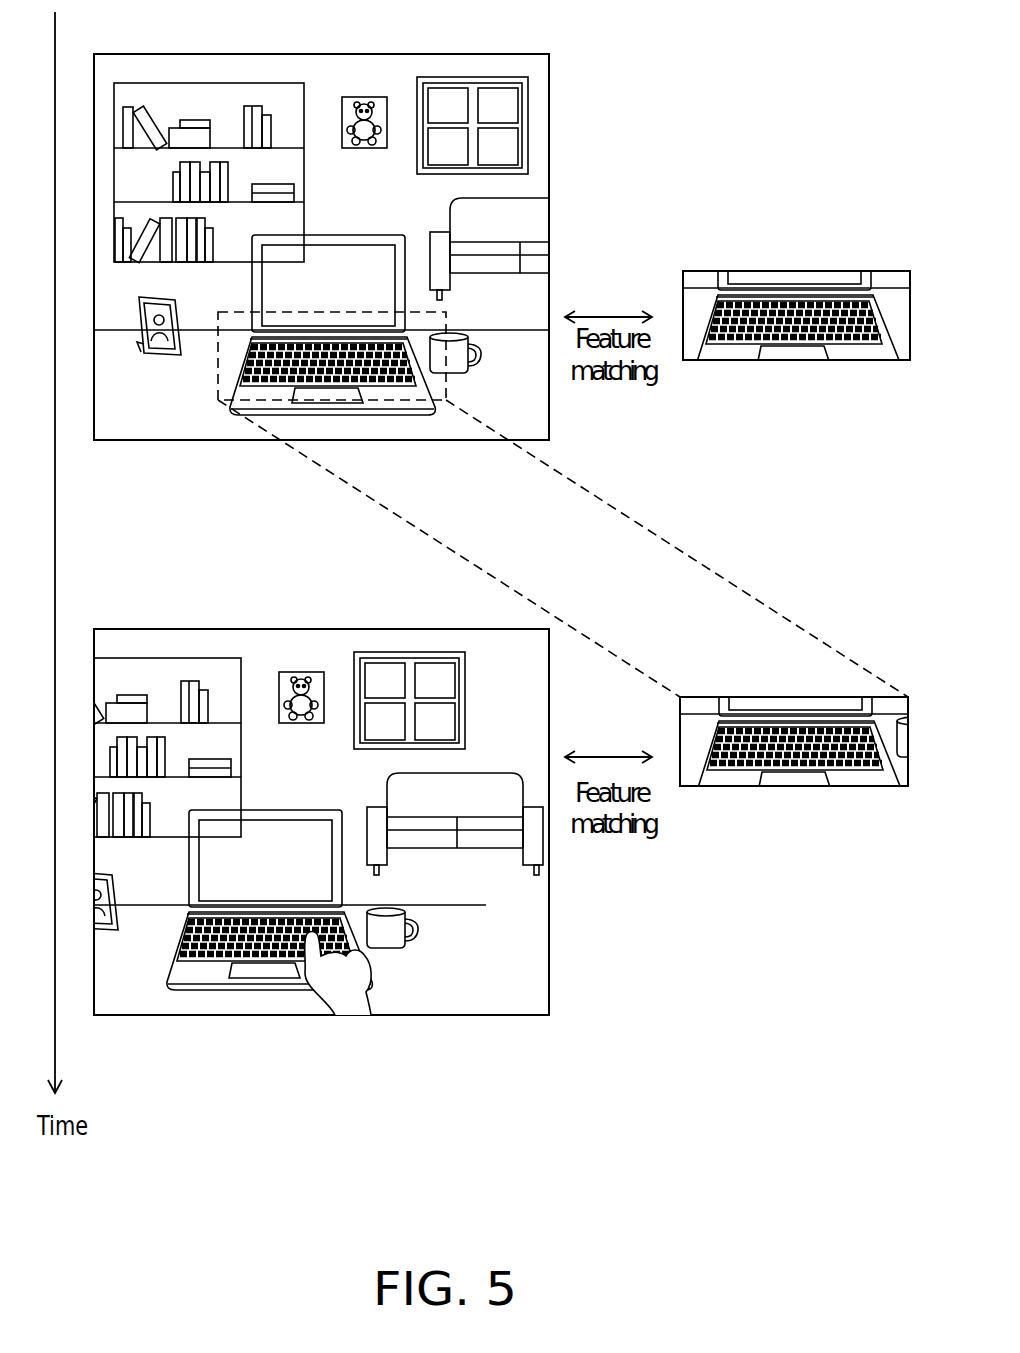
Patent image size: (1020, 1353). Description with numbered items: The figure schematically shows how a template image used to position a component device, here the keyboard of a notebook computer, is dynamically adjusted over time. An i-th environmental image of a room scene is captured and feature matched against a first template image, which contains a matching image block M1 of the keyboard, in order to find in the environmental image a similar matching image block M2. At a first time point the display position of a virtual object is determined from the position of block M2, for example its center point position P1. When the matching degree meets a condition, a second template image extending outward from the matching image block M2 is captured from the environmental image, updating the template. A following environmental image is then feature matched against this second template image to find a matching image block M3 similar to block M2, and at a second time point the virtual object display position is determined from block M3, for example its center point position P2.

The center point position P1 is at (322, 345).
The center point position P2 is at (253, 948).
The matching image block M1 is at (855, 355).
The matching image block M2 is at (437, 380).
The matching image block M3 is at (363, 958).